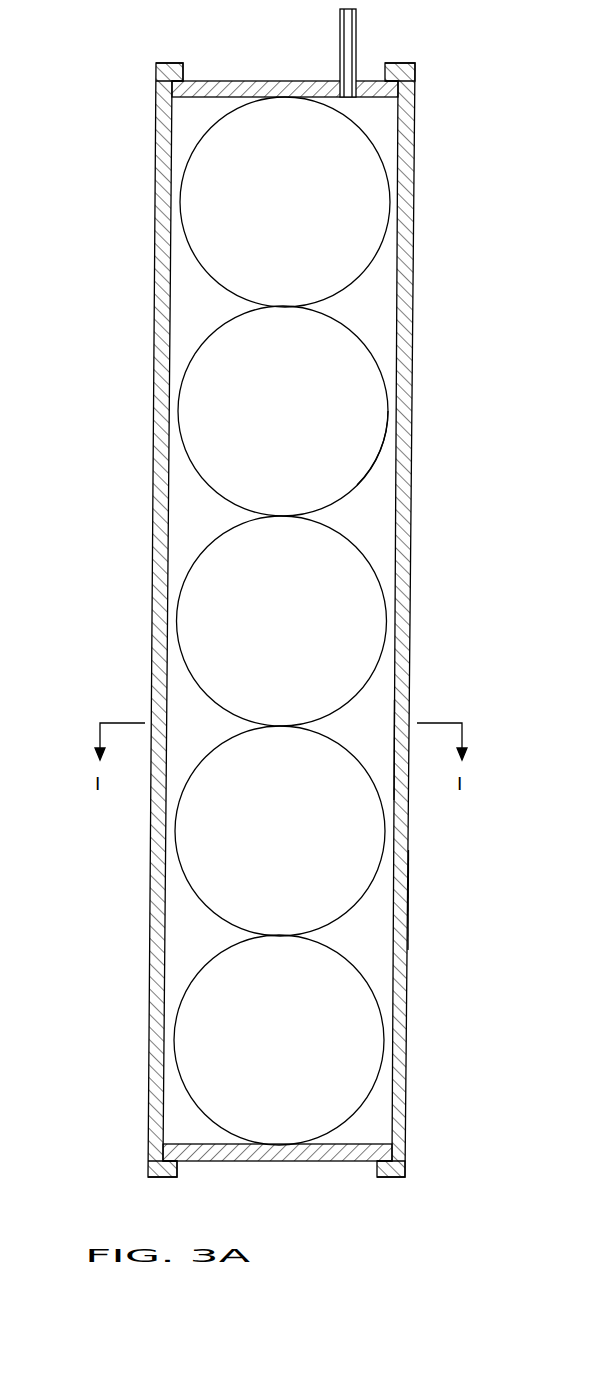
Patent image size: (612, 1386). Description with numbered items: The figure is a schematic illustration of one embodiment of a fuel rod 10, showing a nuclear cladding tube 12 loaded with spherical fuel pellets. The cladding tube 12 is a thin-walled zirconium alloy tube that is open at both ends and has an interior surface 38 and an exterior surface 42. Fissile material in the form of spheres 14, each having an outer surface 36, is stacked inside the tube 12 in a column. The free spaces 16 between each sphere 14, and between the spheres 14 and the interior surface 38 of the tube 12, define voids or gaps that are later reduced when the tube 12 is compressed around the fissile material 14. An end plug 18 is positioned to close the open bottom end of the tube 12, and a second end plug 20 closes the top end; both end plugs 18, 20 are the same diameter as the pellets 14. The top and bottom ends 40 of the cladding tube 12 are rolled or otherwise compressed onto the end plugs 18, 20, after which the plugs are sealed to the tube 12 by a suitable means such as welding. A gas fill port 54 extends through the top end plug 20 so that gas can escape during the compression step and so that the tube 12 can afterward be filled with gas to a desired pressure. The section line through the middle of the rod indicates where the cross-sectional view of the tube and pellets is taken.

The fuel rod 10 is at (120, 142).
The cladding tube 12 is at (412, 315).
The spheres 14 is at (358, 216).
The free spaces 16 is at (375, 707).
The end plug 18 is at (350, 1161).
The end plug 20 is at (218, 94).
The outer surfaces 36 is at (358, 485).
The interior surface 38 is at (394, 756).
The top and bottom ends 40 is at (408, 73).
The exterior surface 42 is at (409, 905).
The gas fill port 54 is at (356, 30).